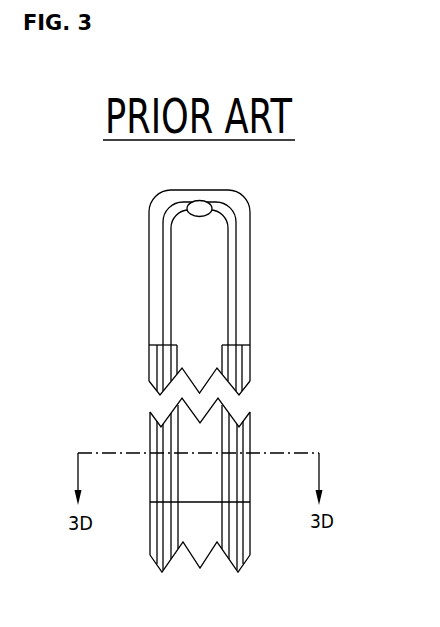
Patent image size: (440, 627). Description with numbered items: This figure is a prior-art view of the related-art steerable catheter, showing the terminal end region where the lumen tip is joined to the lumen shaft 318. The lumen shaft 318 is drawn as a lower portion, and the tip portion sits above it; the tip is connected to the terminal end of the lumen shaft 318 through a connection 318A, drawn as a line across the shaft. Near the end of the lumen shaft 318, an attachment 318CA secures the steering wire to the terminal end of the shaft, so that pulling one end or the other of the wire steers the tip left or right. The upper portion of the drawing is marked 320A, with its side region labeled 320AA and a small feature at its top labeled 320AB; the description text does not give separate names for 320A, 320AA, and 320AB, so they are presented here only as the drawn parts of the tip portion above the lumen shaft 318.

The prior art staple (upper portion) 320A is at (192, 285).
The staple leg / wire 320AA is at (237, 262).
The staple crown bend 320AB is at (212, 203).
The attachment 318CA is at (146, 345).
The lumen shaft 318 is at (205, 491).
The connection 318A is at (147, 502).